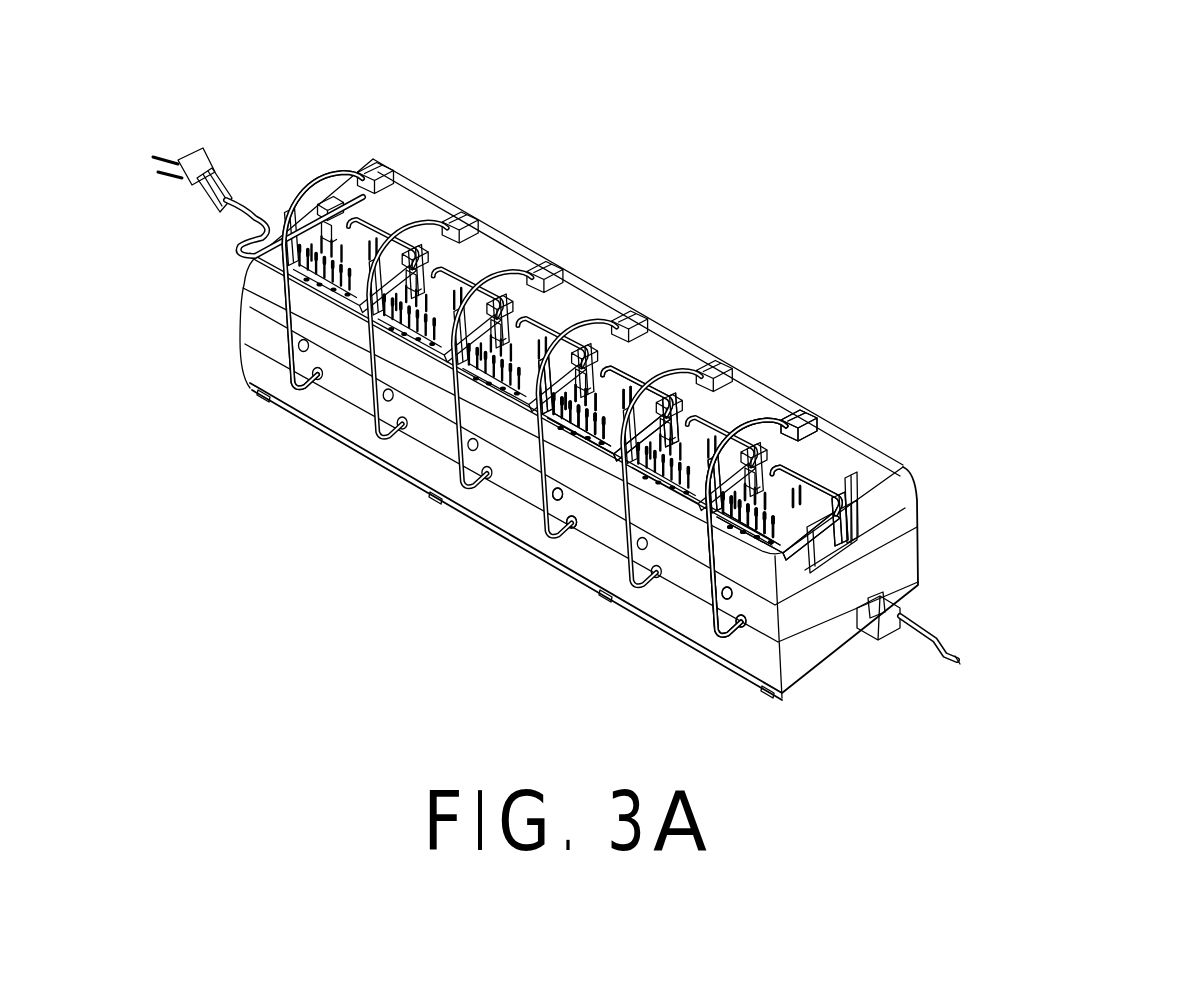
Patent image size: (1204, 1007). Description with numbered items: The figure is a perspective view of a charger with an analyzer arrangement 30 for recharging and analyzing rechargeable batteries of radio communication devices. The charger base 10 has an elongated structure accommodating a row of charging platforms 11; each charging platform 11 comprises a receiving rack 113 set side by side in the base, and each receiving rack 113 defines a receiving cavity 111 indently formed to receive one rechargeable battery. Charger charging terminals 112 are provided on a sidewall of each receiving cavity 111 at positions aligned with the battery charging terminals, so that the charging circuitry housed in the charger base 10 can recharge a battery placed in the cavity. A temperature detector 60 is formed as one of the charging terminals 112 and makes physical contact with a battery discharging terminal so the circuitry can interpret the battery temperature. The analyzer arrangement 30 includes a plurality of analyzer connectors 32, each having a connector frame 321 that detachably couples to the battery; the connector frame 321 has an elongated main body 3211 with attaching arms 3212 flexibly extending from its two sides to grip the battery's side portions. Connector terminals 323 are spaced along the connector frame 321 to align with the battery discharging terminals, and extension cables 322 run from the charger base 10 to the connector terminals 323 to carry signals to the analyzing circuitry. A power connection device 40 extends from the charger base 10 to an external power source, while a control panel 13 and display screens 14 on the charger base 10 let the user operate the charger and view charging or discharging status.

The charger base 10 is at (890, 518).
The charging platform 11 is at (650, 342).
The receiving cavity 111 is at (759, 428).
The charger charging terminal 112 is at (838, 547).
The receiving rack 113 is at (845, 458).
The control panel 13 is at (267, 318).
The display screen 14 is at (426, 200).
The analyzer arrangement 30 is at (312, 397).
The analyzer connector 32 is at (522, 262).
The connector frame 321 is at (614, 307).
The elongated main body 3211 is at (712, 431).
The attaching arm 3212 is at (803, 492).
The extension cable 322 is at (712, 608).
The connector terminal 323 is at (357, 178).
The power connection device 40 is at (925, 652).
The temperature detector 60 is at (303, 283).